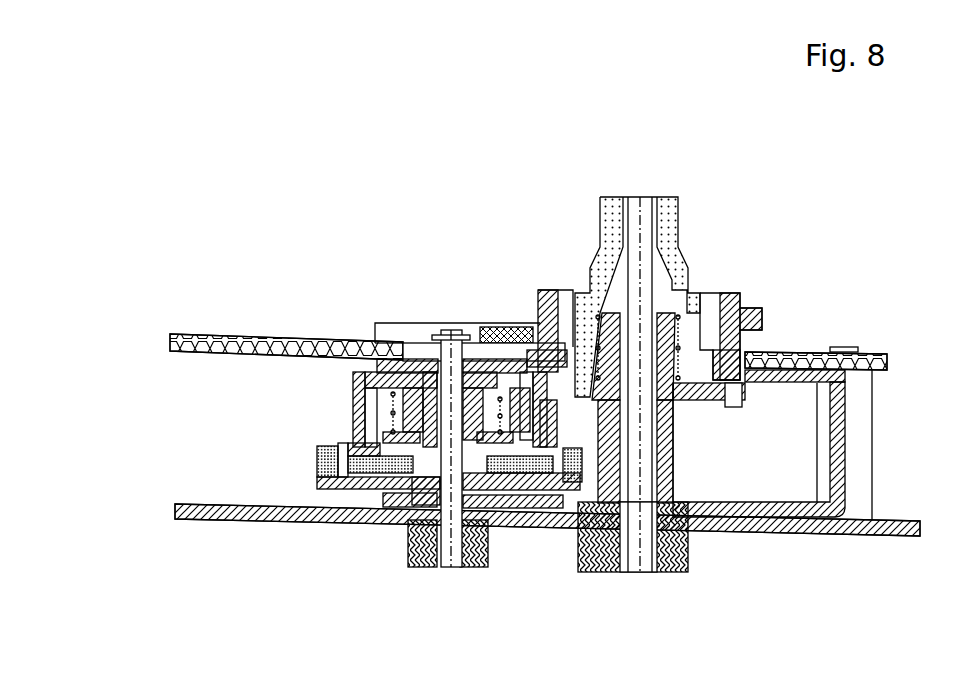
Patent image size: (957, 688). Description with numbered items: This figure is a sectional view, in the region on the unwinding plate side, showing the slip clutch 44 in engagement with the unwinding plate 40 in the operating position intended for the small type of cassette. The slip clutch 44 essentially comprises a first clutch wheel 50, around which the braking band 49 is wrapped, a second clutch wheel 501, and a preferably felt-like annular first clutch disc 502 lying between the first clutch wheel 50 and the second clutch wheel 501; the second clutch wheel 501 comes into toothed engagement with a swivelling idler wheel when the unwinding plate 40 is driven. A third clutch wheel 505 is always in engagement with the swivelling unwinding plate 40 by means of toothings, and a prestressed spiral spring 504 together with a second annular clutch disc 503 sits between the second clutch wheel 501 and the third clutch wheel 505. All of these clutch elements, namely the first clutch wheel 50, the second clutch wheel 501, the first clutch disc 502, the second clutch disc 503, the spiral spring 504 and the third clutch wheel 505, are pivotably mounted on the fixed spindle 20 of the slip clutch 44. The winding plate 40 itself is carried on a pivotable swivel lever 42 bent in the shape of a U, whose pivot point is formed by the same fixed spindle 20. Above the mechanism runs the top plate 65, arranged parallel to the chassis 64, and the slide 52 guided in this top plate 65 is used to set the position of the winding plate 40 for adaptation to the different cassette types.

The fixed spindle 20 is at (456, 336).
The unwinding plate 40 is at (738, 308).
The swivel lever 42 is at (837, 457).
The slip clutch 44 is at (168, 433).
The braking band 49 is at (318, 452).
The first clutch wheel 50 is at (322, 485).
The slide 52 is at (411, 322).
The chassis 64 is at (888, 538).
The top plate 65 is at (887, 360).
The second clutch wheel 501 is at (372, 425).
The first clutch disc 502 is at (372, 441).
The second clutch disc 503 is at (393, 435).
The spiral spring 504 is at (520, 440).
The third clutch wheel 505 is at (358, 375).